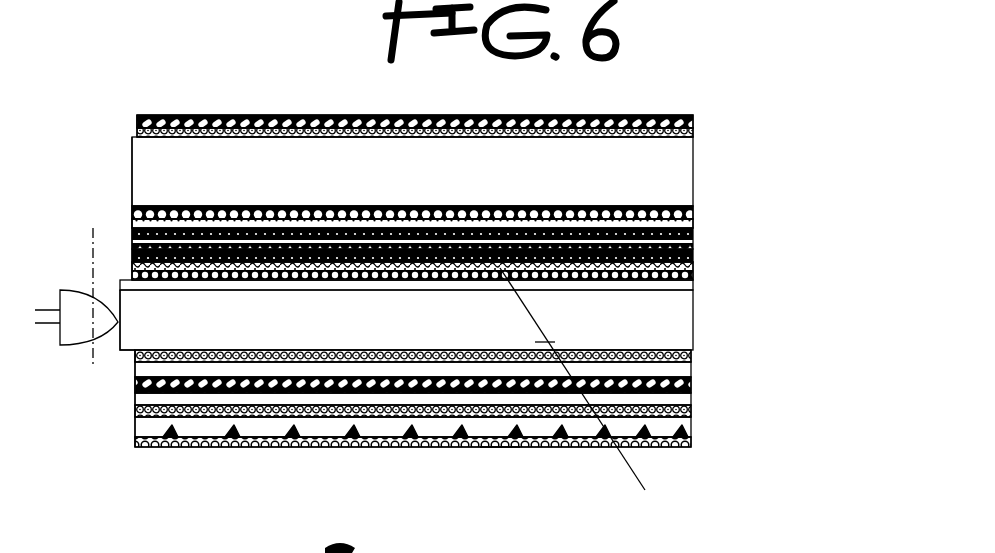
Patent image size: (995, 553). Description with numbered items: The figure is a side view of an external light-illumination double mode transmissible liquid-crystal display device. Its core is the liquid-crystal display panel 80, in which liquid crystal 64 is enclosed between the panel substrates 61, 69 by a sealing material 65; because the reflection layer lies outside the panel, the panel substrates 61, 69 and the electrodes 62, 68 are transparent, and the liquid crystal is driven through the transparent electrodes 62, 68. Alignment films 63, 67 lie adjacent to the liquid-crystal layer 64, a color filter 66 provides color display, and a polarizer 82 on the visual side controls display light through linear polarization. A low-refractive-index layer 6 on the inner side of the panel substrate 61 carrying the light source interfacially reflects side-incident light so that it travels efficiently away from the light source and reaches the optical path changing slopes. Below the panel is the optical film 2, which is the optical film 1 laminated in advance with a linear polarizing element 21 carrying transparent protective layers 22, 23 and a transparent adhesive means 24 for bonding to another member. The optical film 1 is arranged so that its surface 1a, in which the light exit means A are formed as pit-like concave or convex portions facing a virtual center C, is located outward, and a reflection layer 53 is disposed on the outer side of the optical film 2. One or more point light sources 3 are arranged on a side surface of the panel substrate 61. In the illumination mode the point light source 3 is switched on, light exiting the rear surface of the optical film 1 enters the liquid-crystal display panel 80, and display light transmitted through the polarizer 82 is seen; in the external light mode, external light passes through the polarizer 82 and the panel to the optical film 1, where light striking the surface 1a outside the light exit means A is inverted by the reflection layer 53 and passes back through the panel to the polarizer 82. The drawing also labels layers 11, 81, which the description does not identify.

The optical film 1 is at (691, 437).
The light exit means-forming surface 1a is at (500, 447).
The optical film 2 is at (745, 338).
The point light source 3 is at (80, 320).
The low-refractive-index layer 6 is at (693, 290).
The electrode layer 11 is at (691, 412).
The linear polarizing element 21 is at (691, 386).
The transparent protective layer 22 is at (691, 400).
The transparent protective layer 23 is at (691, 370).
The transparent adhesive means 24 is at (691, 352).
The reflection layer 53 is at (691, 448).
The panel substrate 61 is at (693, 322).
The transparent electrode 62 is at (693, 277).
The alignment film 63 is at (693, 262).
The liquid-crystal layer 64 is at (581, 392).
The sealing material 65 is at (118, 325).
The color filter 66 is at (693, 213).
The alignment film 67 is at (693, 238).
The transparent electrode 68 is at (693, 224).
The panel substrate 69 is at (693, 170).
The liquid-crystal display panel 80 is at (797, 113).
The electrode layer 81 is at (693, 133).
The polarizer 82 is at (693, 122).
The light exit means A is at (285, 440).
The virtual center C is at (95, 278).